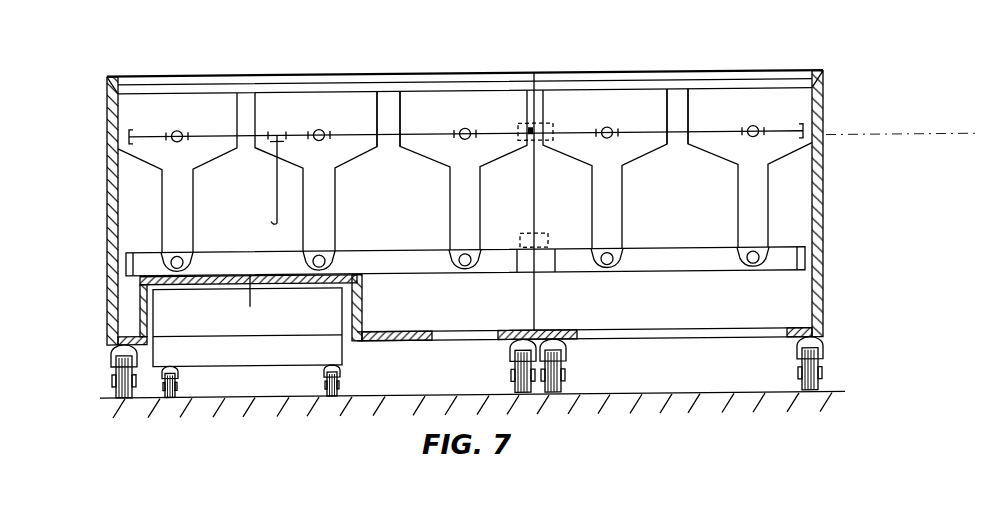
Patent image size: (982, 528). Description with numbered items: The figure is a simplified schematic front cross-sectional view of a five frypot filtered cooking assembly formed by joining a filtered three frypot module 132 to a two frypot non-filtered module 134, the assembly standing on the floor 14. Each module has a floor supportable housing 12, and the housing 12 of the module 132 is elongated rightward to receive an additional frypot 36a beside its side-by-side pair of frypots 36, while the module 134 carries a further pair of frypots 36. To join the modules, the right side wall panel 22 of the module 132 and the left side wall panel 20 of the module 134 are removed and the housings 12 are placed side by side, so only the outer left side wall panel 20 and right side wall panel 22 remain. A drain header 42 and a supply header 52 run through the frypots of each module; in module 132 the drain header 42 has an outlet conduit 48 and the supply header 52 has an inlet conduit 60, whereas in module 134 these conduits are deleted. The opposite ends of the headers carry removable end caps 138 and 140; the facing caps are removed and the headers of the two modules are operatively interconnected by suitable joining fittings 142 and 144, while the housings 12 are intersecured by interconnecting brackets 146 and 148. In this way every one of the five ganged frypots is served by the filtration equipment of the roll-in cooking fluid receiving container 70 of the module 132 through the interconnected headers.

The housing 12 is at (468, 207).
The floor surface 14 is at (104, 399).
The left side wall panel 20 is at (107, 207).
The right side wall panel 22 is at (823, 242).
The frypot 36 is at (191, 120).
The additional frypot 36a is at (477, 122).
The drain header 42 is at (392, 254).
The outlet conduit 48 is at (250, 308).
The supply header 52 is at (390, 147).
The inlet conduit 60 is at (277, 196).
The cooking fluid receiving container 70 is at (210, 330).
The three frypot module 132 is at (224, 73).
The two frypot module 134 is at (650, 76).
The end cap 138 is at (125, 261).
The end cap 140 is at (107, 138).
The joining fitting 142 is at (528, 273).
The joining fitting 144 is at (527, 148).
The interconnecting bracket 146 is at (541, 238).
The interconnecting bracket 148 is at (545, 129).